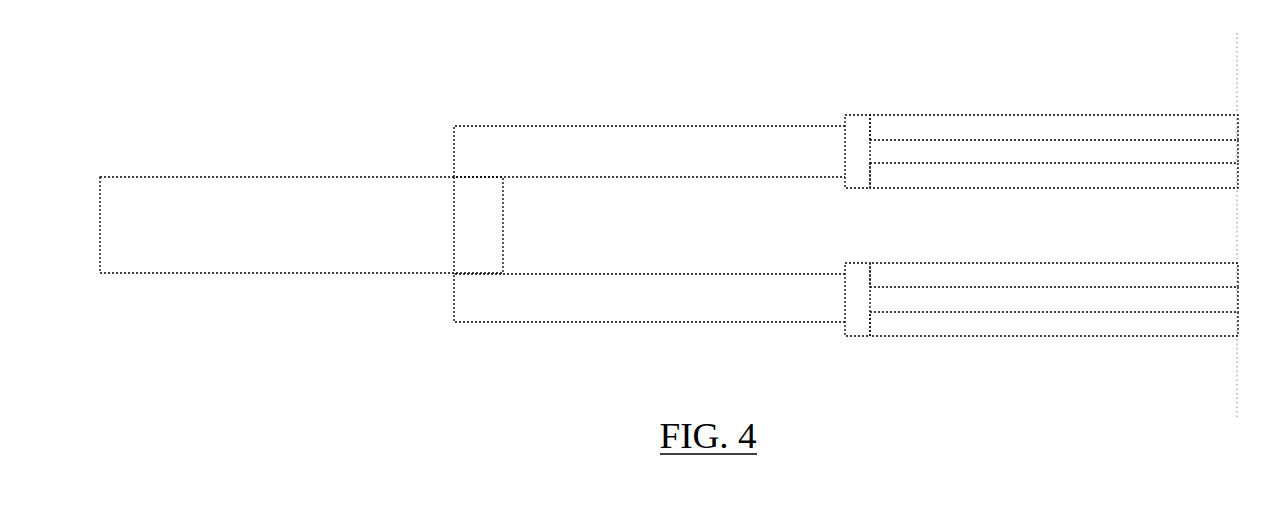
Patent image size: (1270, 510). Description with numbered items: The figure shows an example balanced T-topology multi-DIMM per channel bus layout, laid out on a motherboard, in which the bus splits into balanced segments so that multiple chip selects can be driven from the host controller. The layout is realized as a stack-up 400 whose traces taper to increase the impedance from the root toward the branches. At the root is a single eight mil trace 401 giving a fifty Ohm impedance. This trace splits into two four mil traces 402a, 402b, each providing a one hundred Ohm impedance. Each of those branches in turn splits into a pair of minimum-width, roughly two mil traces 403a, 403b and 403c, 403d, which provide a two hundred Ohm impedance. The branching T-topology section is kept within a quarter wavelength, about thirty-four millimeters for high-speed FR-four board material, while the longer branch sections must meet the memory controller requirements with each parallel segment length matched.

The stack-up 400 is at (1205, 226).
The 8 mil trace 401 is at (301, 225).
The 4 mil trace 402a is at (649, 151).
The 4 mil trace 402b is at (649, 249).
The 2.0 mil trace 403a is at (1054, 127).
The 2.0 mil trace 403b is at (1054, 164).
The 2.0 mil trace 403c is at (1054, 275).
The 2.0 mil trace 403d is at (1054, 311).